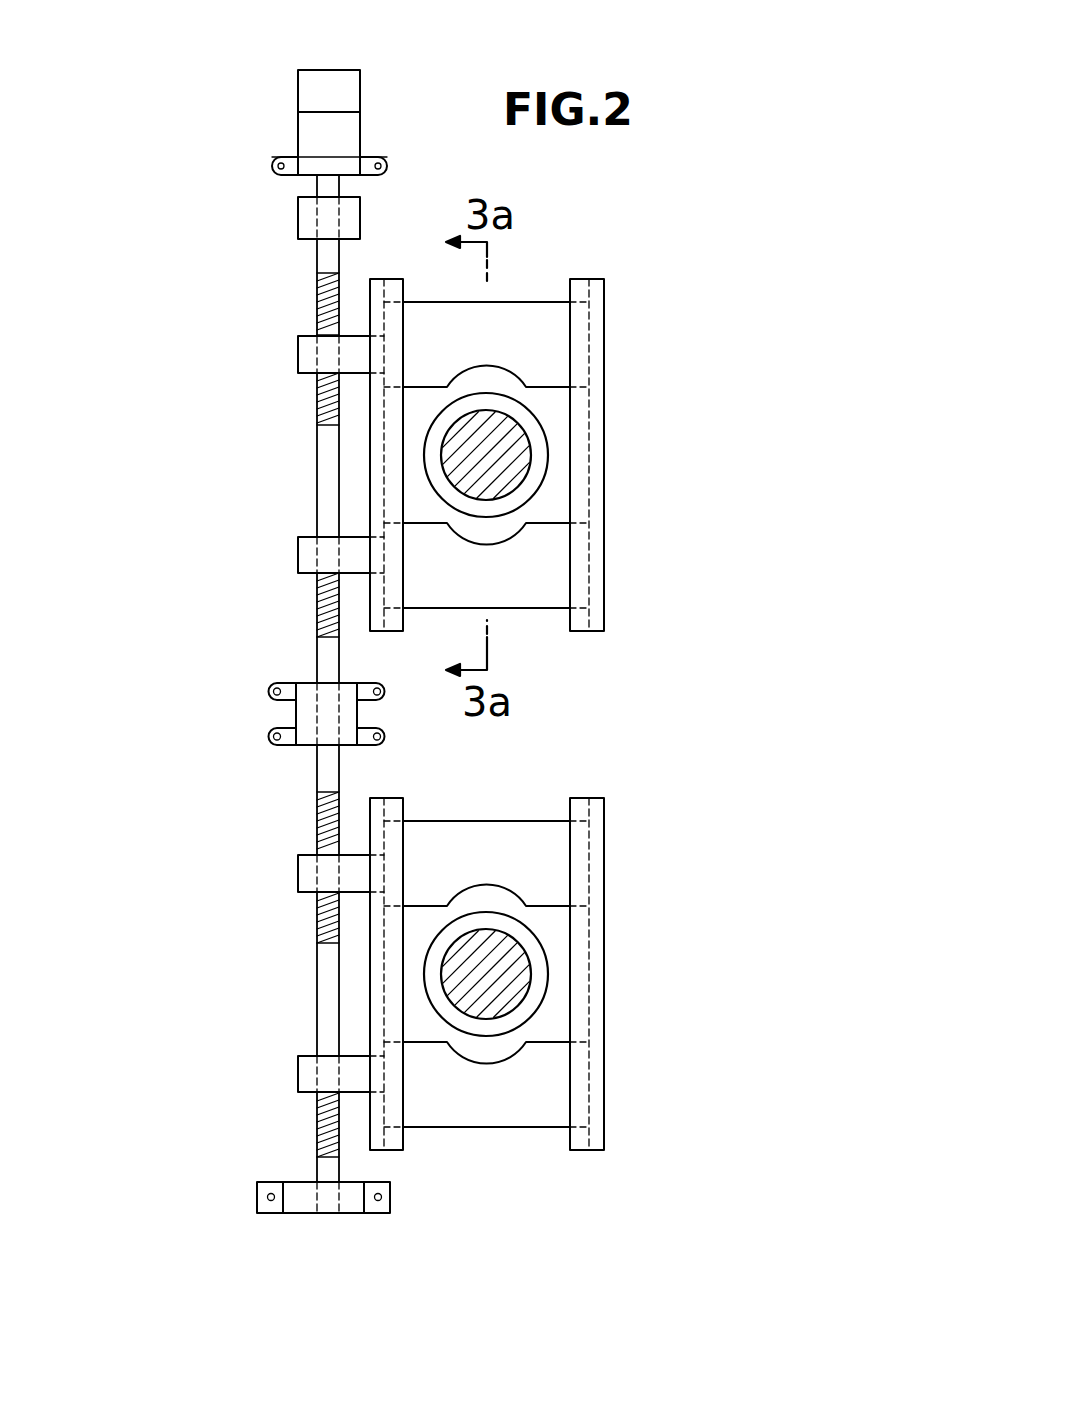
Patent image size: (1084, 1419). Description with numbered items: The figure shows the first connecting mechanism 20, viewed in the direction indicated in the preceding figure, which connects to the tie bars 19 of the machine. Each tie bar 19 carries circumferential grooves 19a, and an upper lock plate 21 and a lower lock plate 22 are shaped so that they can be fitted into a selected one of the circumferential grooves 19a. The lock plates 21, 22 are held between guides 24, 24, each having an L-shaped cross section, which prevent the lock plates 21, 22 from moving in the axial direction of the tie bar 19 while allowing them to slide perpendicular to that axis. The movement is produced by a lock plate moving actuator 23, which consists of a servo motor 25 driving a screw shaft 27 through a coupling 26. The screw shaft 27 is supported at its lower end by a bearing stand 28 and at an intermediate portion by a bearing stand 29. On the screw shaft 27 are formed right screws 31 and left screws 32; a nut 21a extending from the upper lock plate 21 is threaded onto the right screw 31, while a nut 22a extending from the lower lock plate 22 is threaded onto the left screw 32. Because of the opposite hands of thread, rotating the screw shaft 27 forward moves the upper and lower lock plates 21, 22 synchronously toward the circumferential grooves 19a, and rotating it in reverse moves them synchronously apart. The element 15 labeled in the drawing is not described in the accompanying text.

The clamp unit 15 is at (587, 722).
The tie bar 19 is at (520, 457).
The circumferential groove 19a is at (518, 435).
The first connecting mechanism 20 is at (692, 196).
The upper lock plate 21 is at (518, 313).
The nut 21a is at (308, 357).
The lower lock plate 22 is at (538, 583).
The nut 22a is at (308, 557).
The lock plate moving actuator 23 is at (266, 98).
The guide 24 is at (392, 286).
The servo motor 25 is at (345, 134).
The coupling 26 is at (322, 210).
The screw shaft 27 is at (325, 460).
The bearing stand 28 is at (305, 1200).
The bearing stand 29 is at (305, 718).
The right screw 31 is at (325, 302).
The left screw 32 is at (325, 608).